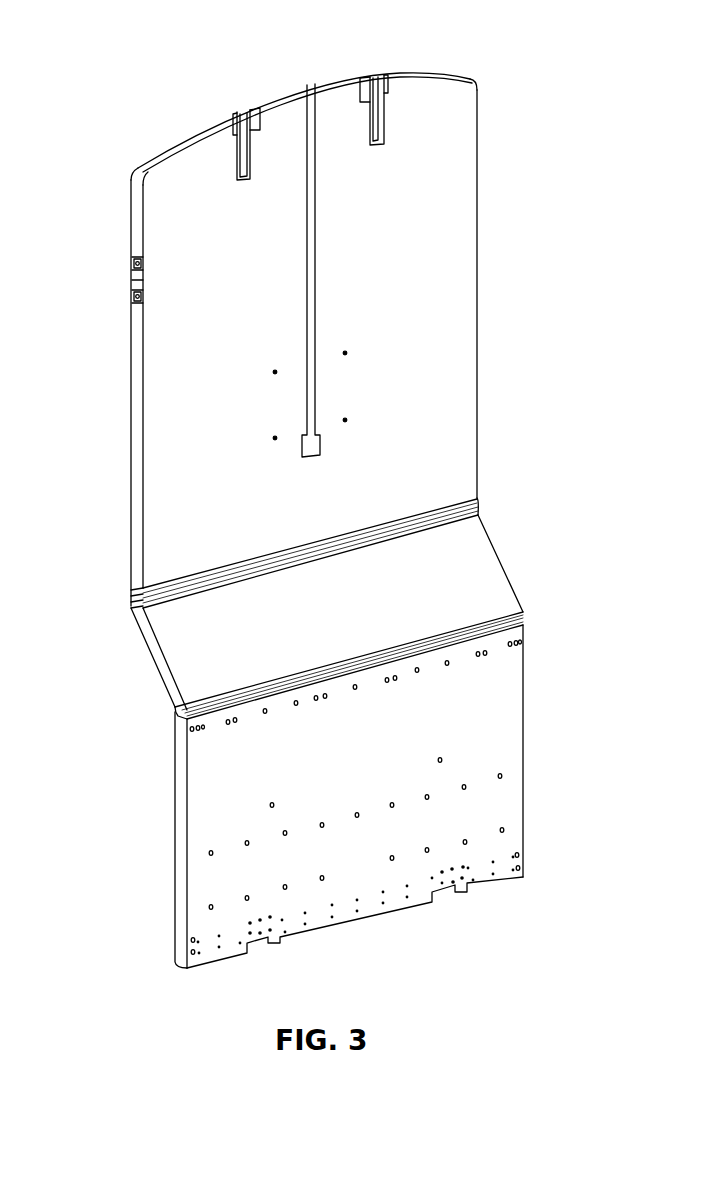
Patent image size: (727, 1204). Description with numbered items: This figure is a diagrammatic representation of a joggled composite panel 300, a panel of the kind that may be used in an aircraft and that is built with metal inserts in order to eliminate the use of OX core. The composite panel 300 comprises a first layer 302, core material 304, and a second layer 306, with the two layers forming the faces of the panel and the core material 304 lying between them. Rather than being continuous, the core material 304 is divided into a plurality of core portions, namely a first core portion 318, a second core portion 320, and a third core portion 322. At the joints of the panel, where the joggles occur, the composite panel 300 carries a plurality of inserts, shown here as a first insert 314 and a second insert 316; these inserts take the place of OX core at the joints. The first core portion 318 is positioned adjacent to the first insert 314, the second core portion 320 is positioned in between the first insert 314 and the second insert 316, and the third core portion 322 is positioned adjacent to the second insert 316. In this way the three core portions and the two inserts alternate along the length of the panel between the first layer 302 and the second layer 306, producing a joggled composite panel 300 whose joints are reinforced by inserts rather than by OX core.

The joggled composite panel 300 is at (309, 50).
The first layer 302 is at (131, 517).
The core material 304 is at (190, 132).
The second layer 306 is at (477, 175).
The first insert 314 is at (131, 600).
The second insert 316 is at (176, 710).
The first core portion 318 is at (138, 333).
The second core portion 320 is at (155, 645).
The third core portion 322 is at (183, 812).